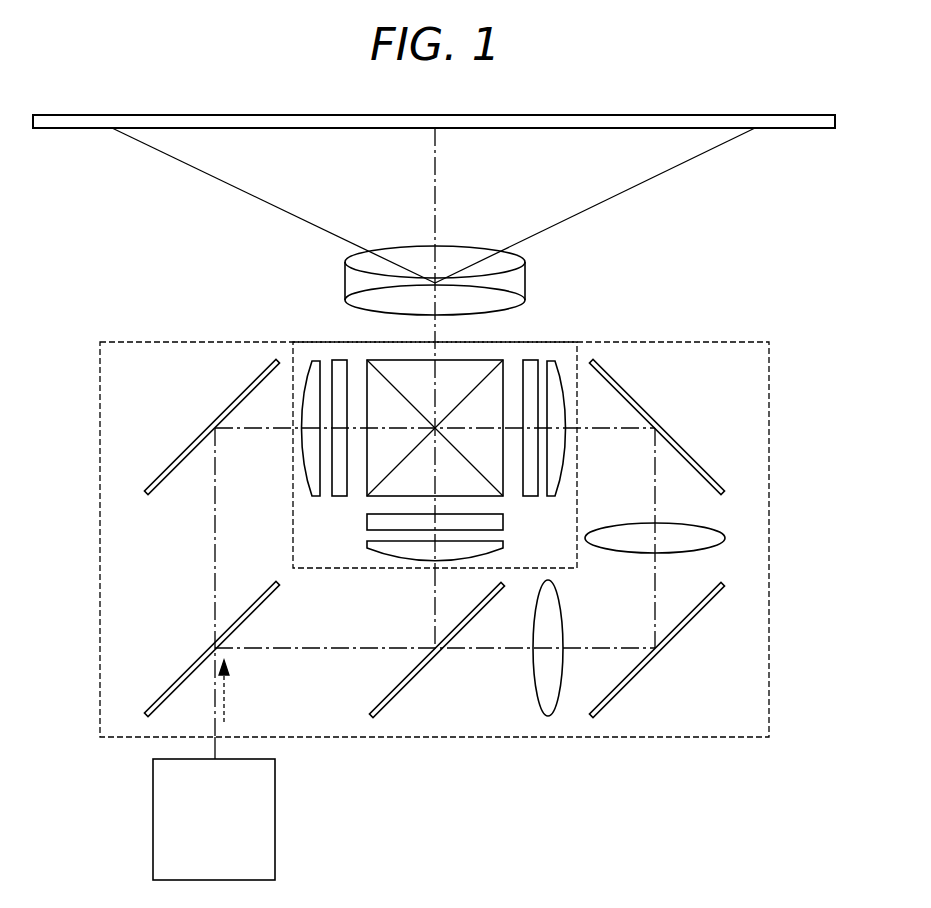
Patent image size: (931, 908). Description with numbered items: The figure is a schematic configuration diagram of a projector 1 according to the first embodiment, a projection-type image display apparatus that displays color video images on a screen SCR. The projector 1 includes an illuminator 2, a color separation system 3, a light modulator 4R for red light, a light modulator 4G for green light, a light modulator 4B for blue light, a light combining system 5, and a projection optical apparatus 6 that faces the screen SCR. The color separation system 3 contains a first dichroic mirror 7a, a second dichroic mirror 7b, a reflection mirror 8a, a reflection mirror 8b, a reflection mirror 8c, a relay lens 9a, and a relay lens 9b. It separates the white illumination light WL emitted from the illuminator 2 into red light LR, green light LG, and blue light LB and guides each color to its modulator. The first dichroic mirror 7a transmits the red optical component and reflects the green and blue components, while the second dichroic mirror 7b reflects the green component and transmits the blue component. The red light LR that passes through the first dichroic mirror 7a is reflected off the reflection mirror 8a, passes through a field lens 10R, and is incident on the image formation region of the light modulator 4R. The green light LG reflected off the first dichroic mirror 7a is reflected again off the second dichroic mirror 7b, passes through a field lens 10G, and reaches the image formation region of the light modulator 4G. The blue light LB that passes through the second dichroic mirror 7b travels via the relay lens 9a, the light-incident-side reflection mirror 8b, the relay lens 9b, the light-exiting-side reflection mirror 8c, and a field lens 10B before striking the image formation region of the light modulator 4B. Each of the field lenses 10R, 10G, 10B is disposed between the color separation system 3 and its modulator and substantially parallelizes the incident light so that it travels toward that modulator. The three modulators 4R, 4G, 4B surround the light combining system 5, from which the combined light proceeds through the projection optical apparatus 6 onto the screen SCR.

The projector 1 is at (773, 322).
The illuminator 2 is at (275, 817).
The color separation system 3 is at (100, 483).
The light modulator 4R is at (338, 358).
The light modulator 4G is at (375, 523).
The light modulator 4B is at (528, 358).
The light combining system 5 is at (458, 367).
The projection optical apparatus 6 is at (414, 256).
The first dichroic mirror 7a is at (177, 680).
The second dichroic mirror 7b is at (413, 682).
The reflection mirror 8a is at (190, 440).
The reflection mirror 8b is at (682, 635).
The reflection mirror 8c is at (683, 445).
The relay lens 9a is at (533, 668).
The relay lens 9b is at (713, 530).
The field lens 10R is at (318, 358).
The field lens 10G is at (373, 545).
The field lens 10B is at (552, 358).
The screen SCR is at (802, 130).
The red light LR is at (215, 558).
The green light LG is at (435, 605).
The blue light LB is at (653, 595).
The white illumination light WL is at (232, 700).